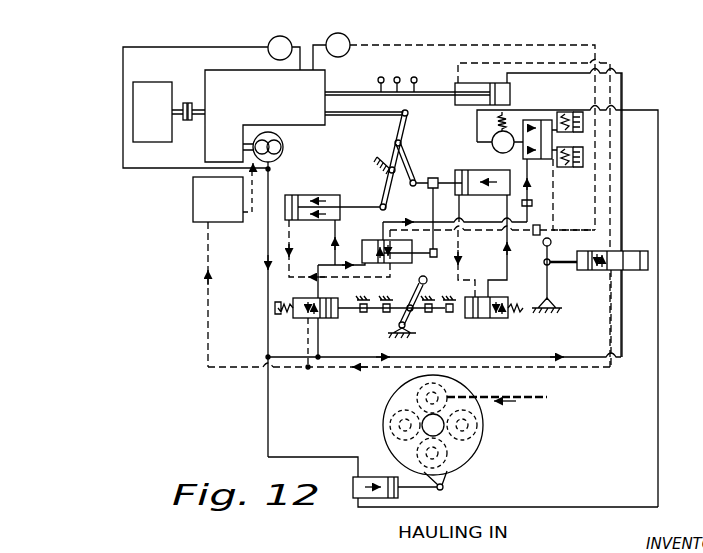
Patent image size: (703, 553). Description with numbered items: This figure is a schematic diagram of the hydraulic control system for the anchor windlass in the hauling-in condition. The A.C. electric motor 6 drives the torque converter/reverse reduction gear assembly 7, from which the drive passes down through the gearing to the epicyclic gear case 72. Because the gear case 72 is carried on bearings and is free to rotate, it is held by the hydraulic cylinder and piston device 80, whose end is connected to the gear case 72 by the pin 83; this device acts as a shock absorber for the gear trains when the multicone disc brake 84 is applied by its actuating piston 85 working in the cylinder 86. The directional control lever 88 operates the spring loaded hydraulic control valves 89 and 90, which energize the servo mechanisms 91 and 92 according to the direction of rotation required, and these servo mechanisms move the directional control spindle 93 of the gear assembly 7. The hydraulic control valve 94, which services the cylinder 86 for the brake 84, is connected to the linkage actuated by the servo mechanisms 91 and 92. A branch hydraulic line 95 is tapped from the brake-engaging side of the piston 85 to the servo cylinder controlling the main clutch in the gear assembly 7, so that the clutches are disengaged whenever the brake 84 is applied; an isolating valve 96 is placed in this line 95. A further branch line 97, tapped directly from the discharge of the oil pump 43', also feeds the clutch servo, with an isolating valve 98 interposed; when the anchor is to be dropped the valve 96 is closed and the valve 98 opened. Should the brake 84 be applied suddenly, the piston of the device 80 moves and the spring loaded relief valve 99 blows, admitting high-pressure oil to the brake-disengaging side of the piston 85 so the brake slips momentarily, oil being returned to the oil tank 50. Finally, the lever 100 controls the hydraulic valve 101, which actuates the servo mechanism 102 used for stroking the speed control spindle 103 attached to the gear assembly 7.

The A.C. electric motor 6 is at (158, 90).
The torque converter/reverse reduction gear assembly 7 is at (231, 80).
The oil pump 43' is at (275, 294).
The oil tank 50 is at (193, 212).
The epicyclic gear case 72 is at (479, 445).
The hydraulic cylinder and piston device 80 is at (353, 480).
The pin 83 is at (444, 486).
The multicone disc brake 84 is at (587, 138).
The actuating piston 85 is at (547, 121).
The cylinder 86 is at (531, 121).
The directional control lever 88 is at (407, 306).
The spring loaded hydraulic control valve 89 is at (325, 319).
The spring loaded hydraulic control valve 90 is at (499, 321).
The servo mechanism 91 is at (325, 195).
The servo mechanism 92 is at (470, 170).
The directional control spindle 93 is at (352, 117).
The hydraulic control valve 94 is at (372, 240).
The branch hydraulic line 95 is at (595, 187).
The isolating valve 96 is at (348, 36).
The branch line 97 is at (144, 172).
The isolating valve 98 is at (284, 36).
The spring loaded relief valve 99 is at (492, 140).
The lever 100 is at (545, 279).
The hydraulic valve 101 is at (599, 273).
The servo mechanism 102 is at (462, 88).
The speed control spindle 103 is at (433, 98).